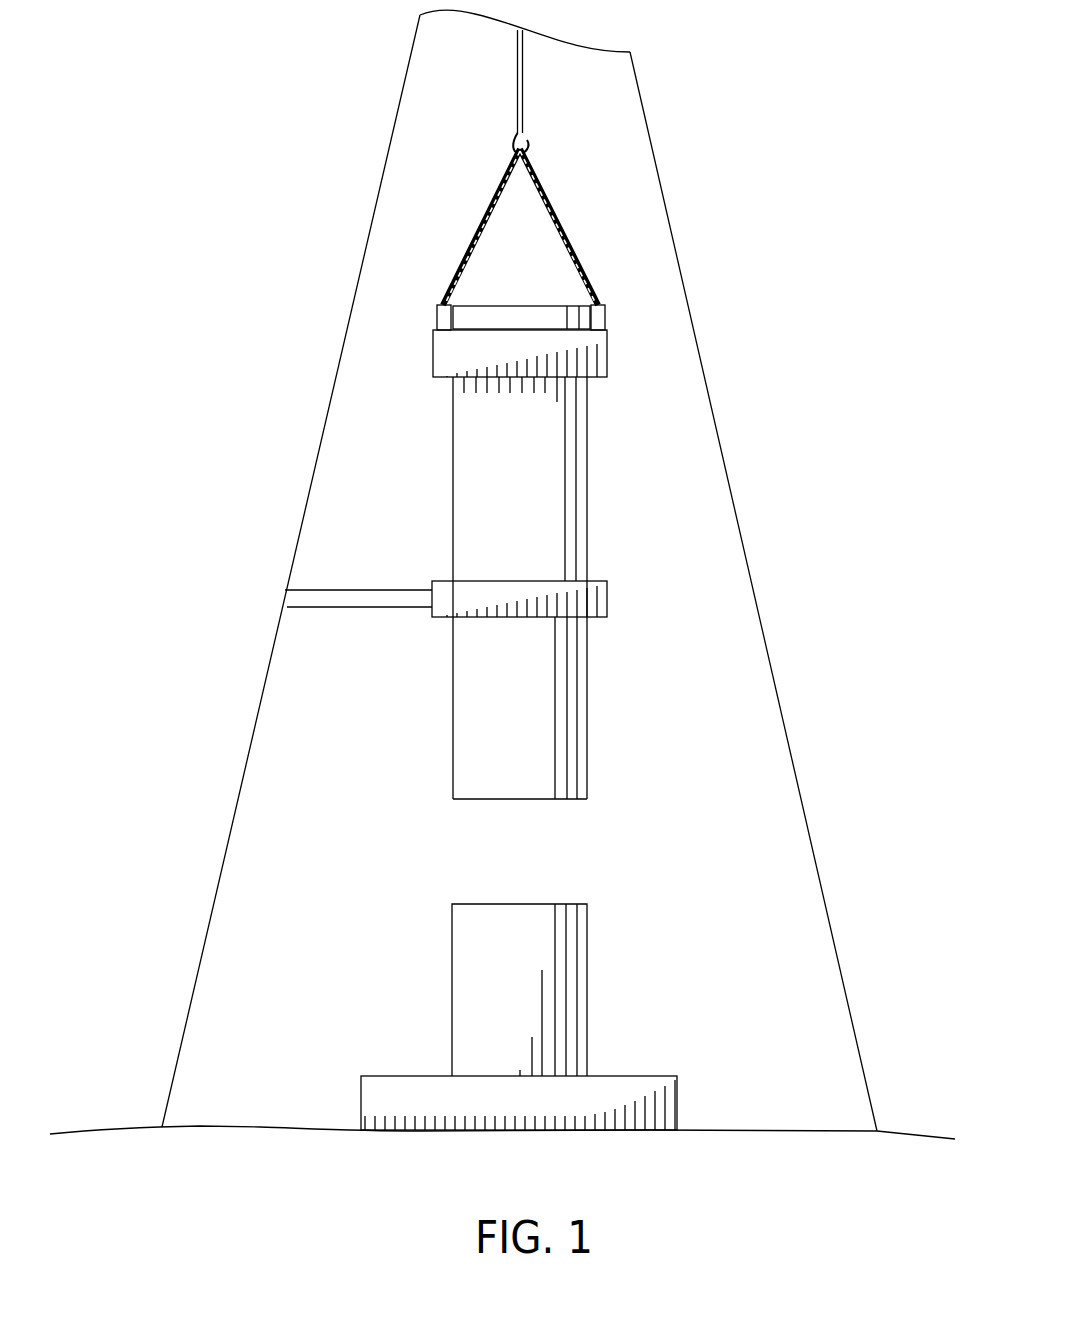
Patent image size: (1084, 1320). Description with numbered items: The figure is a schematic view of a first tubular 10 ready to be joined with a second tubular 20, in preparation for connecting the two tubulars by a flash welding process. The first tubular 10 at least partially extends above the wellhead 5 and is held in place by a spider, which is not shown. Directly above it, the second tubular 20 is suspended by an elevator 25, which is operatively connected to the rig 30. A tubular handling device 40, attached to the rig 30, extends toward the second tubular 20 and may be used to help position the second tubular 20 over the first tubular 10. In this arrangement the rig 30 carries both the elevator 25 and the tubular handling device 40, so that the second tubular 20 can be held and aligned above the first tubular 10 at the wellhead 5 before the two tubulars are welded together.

The wellhead 5 is at (677, 1103).
The first tubular 10 is at (587, 943).
The second tubular 20 is at (587, 482).
The elevator 25 is at (607, 352).
The rig 30 is at (645, 118).
The tubular handling device 40 is at (607, 598).